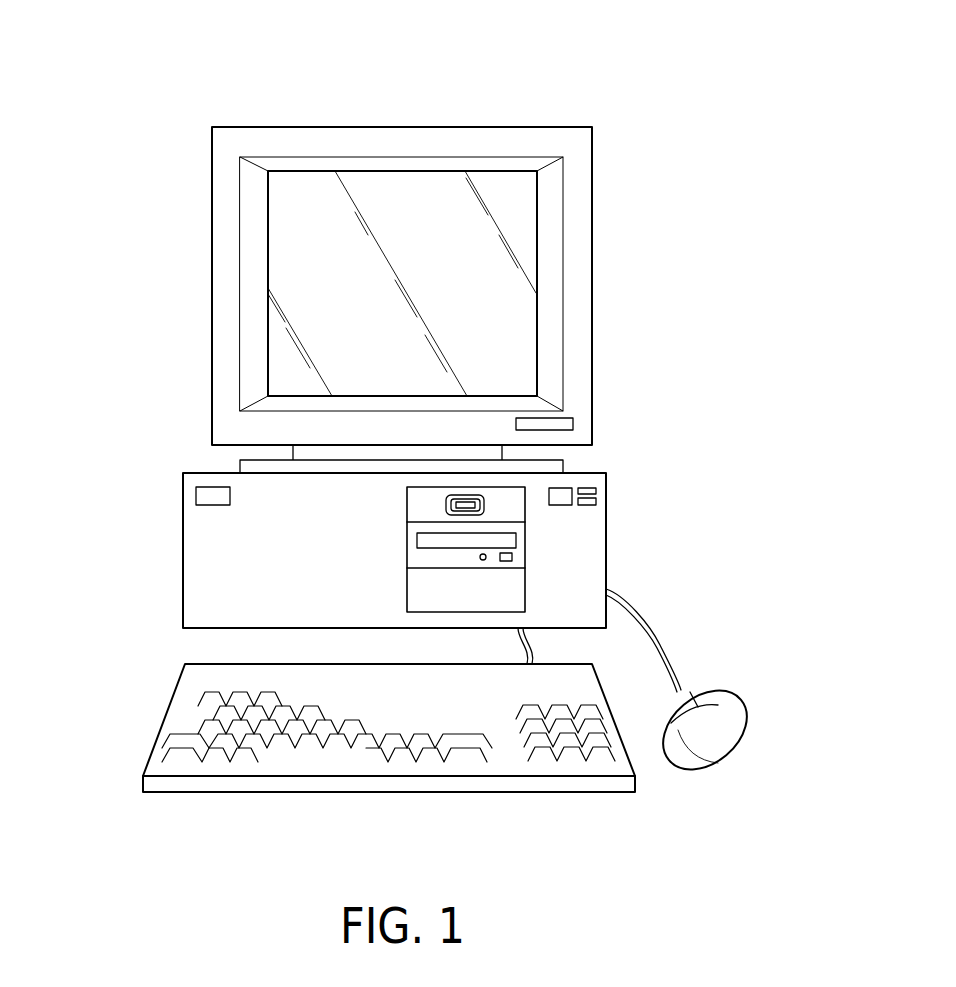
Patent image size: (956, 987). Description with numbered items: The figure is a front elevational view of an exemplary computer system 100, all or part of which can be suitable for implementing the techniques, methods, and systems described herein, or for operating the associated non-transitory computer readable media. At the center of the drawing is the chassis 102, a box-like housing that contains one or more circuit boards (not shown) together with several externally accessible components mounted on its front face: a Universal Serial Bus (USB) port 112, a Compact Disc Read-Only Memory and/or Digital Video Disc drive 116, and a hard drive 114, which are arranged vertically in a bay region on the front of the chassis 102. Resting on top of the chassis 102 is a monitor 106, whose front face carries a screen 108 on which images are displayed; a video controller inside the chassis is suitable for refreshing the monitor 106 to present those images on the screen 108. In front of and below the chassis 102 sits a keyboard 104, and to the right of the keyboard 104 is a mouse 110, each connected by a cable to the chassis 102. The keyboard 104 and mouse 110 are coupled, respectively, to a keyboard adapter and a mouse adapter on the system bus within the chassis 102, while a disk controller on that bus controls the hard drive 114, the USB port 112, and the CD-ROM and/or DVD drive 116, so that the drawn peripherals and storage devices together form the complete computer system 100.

The computer system 100 is at (585, 102).
The chassis 102 is at (183, 553).
The keyboard 104 is at (165, 713).
The monitor 106 is at (288, 127).
The screen 108 is at (317, 288).
The mouse 110 is at (723, 720).
The Universal Serial Bus (USB) port 112 is at (483, 503).
The hard drive 114 is at (515, 587).
The CD-ROM and/or DVD drive 116 is at (516, 547).